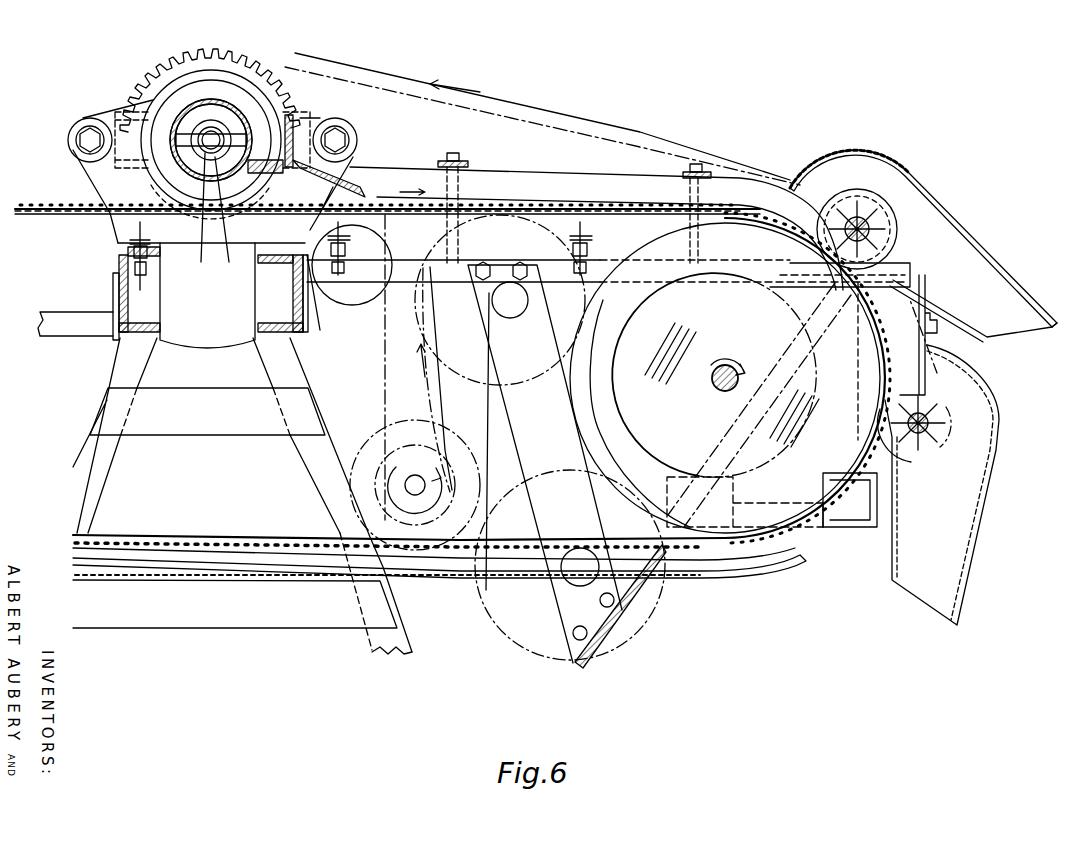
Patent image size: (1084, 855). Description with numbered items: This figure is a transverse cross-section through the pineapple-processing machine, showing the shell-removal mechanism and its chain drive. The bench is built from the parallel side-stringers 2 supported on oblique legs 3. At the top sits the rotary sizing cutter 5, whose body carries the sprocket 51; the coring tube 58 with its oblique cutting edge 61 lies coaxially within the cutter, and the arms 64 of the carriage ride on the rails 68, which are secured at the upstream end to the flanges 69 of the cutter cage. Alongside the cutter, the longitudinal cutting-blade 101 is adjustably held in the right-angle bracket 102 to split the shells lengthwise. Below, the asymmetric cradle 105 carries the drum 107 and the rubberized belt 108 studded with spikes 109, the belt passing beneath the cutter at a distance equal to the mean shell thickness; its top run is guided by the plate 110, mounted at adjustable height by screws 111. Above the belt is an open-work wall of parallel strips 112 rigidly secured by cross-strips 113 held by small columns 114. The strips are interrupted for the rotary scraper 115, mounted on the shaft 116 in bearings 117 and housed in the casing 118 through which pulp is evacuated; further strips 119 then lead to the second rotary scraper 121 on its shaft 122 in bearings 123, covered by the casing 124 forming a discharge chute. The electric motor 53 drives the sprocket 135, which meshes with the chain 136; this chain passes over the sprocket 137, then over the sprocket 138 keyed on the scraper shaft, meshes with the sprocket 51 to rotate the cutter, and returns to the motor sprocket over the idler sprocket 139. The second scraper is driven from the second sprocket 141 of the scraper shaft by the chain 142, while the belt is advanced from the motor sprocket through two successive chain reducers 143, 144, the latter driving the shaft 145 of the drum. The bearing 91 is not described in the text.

The side-stringers 2 is at (122, 298).
The oblique legs 3 is at (87, 472).
The sizing cutter 5 is at (213, 100).
The sprocket 51 is at (284, 100).
The electric motor 53 is at (377, 458).
The cylindrical tube 58 is at (208, 215).
The oblique cutting edge 61 is at (229, 217).
The arms 64 is at (240, 130).
The rails 68 is at (89, 118).
The flanges 69 is at (97, 163).
The bearing 91 is at (181, 140).
The longitudinal cutting-blade 101 is at (254, 178).
The right-angle bracket 102 is at (305, 112).
The asymmetric cradle 105 is at (563, 273).
The drum 107 is at (830, 517).
The rubberized belt 108 is at (43, 205).
The spikes 109 is at (88, 206).
The plate 110 is at (388, 222).
The screws 111 is at (333, 248).
The parallel strips 112 is at (513, 185).
The cross-strips 113 is at (458, 161).
The small columns 114 is at (458, 246).
The rotary scraper 115 is at (873, 217).
The shaft 116 is at (870, 233).
The bearings 117 is at (930, 267).
The casing 118 is at (1032, 298).
The strips 119 is at (907, 333).
The second rotary scraper 121 is at (940, 442).
The shaft 122 is at (920, 457).
The bearings 123 is at (895, 470).
The casing 124 is at (960, 570).
The sprocket 135 is at (397, 490).
The chain 136 is at (647, 145).
The sprocket 137 is at (472, 370).
The sprocket 138 is at (870, 190).
The idler sprocket 139 is at (363, 268).
The second sprocket 141 is at (870, 296).
The chain 142 is at (943, 390).
The chain reducer 143 is at (573, 390).
The chain reducer 144 is at (610, 415).
The shaft 145 is at (712, 380).